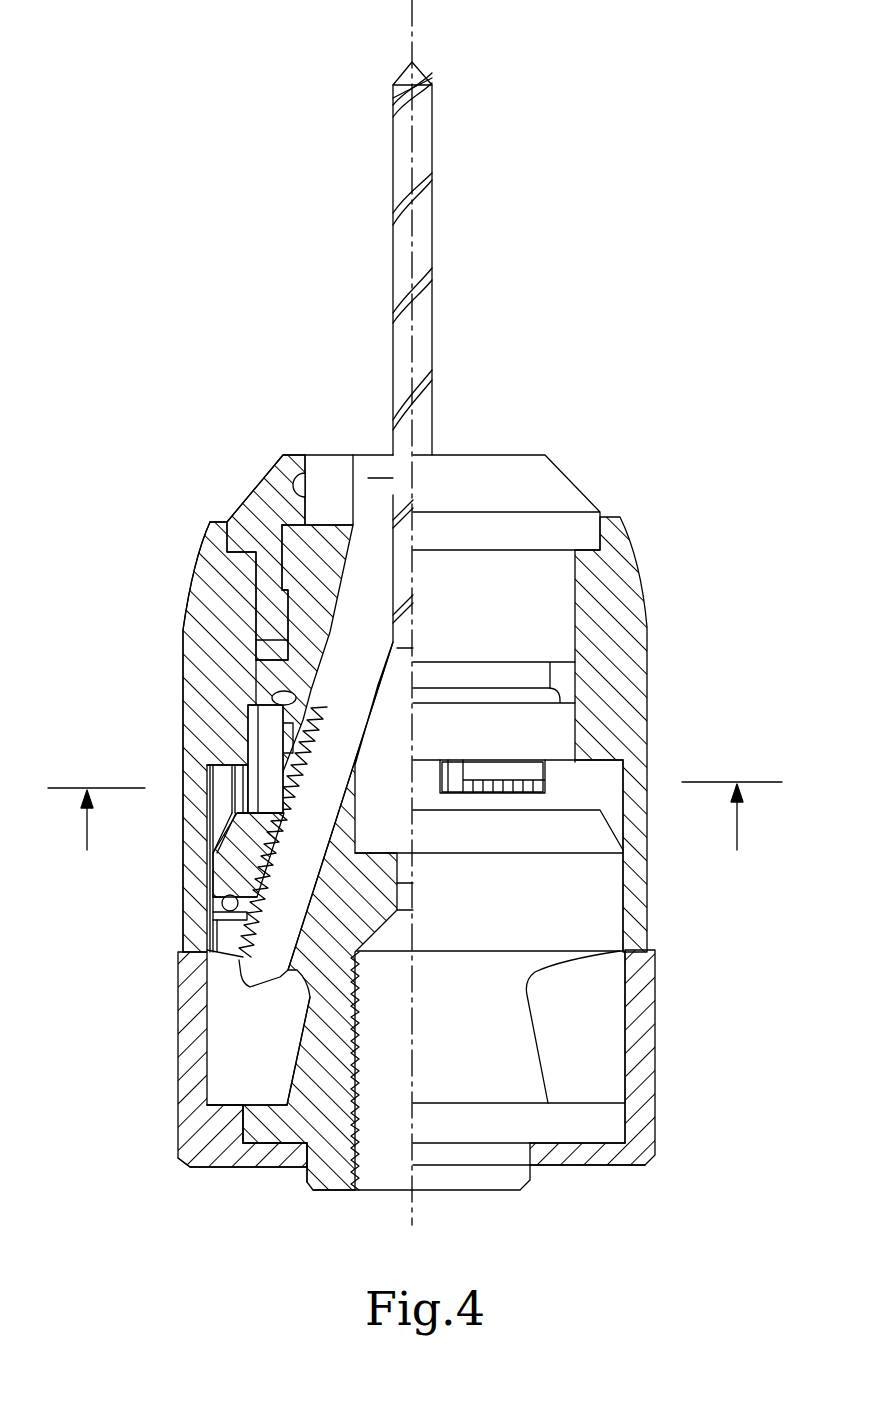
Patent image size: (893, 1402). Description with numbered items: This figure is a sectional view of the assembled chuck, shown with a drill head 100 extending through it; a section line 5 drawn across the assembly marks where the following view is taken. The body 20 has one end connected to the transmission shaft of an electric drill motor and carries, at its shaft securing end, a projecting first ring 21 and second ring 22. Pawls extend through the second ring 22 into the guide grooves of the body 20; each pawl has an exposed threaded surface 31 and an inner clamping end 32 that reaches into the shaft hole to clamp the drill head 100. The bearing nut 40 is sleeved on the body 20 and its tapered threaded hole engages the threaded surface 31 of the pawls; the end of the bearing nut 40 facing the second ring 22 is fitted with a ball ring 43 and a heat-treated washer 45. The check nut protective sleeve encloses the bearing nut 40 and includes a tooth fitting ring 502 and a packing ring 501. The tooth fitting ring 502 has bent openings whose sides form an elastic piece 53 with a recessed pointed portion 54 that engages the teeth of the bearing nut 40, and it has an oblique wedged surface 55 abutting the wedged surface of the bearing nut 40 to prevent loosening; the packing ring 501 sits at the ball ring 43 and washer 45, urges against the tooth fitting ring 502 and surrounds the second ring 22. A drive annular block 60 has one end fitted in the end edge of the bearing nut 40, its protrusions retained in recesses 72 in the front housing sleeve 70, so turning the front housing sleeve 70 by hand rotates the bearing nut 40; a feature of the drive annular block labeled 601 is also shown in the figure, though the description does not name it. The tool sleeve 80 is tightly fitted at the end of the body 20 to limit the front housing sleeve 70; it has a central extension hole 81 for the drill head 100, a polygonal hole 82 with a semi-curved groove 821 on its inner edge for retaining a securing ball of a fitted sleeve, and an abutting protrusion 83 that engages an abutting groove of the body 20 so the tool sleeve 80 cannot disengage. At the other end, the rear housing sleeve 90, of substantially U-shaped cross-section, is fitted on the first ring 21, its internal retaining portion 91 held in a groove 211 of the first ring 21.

The drill head 100 is at (425, 135).
The tool sleeve 80 is at (270, 478).
The extension hole 81 is at (372, 460).
The polygonal hole 82 is at (327, 455).
The semi-curved groove 821 is at (298, 475).
The front housing sleeve 70 is at (215, 530).
The body 20 is at (285, 565).
The abutting protrusion 83 is at (285, 595).
The clamping end 32 is at (295, 630).
The drive annular block 60 is at (265, 652).
The threaded surface 31 is at (275, 697).
The recesses 72 is at (250, 730).
The shoulder 601 is at (240, 768).
The elastic piece 53 is at (240, 795).
The pointed portion 54 is at (462, 768).
The oblique wedged surface 55 is at (240, 822).
The bearing nut 40 is at (250, 858).
The tooth fitting ring 502 is at (212, 880).
The ball ring 43 is at (225, 905).
The heat-treated washer 45 is at (212, 932).
The packing ring 501 is at (225, 955).
The second ring 22 is at (240, 985).
The rear housing sleeve 90 is at (185, 1078).
The retaining portion 91 is at (215, 1120).
The groove 211 is at (227, 1172).
The first ring 21 is at (262, 1150).
The section line 5- 5 is at (414, 818).